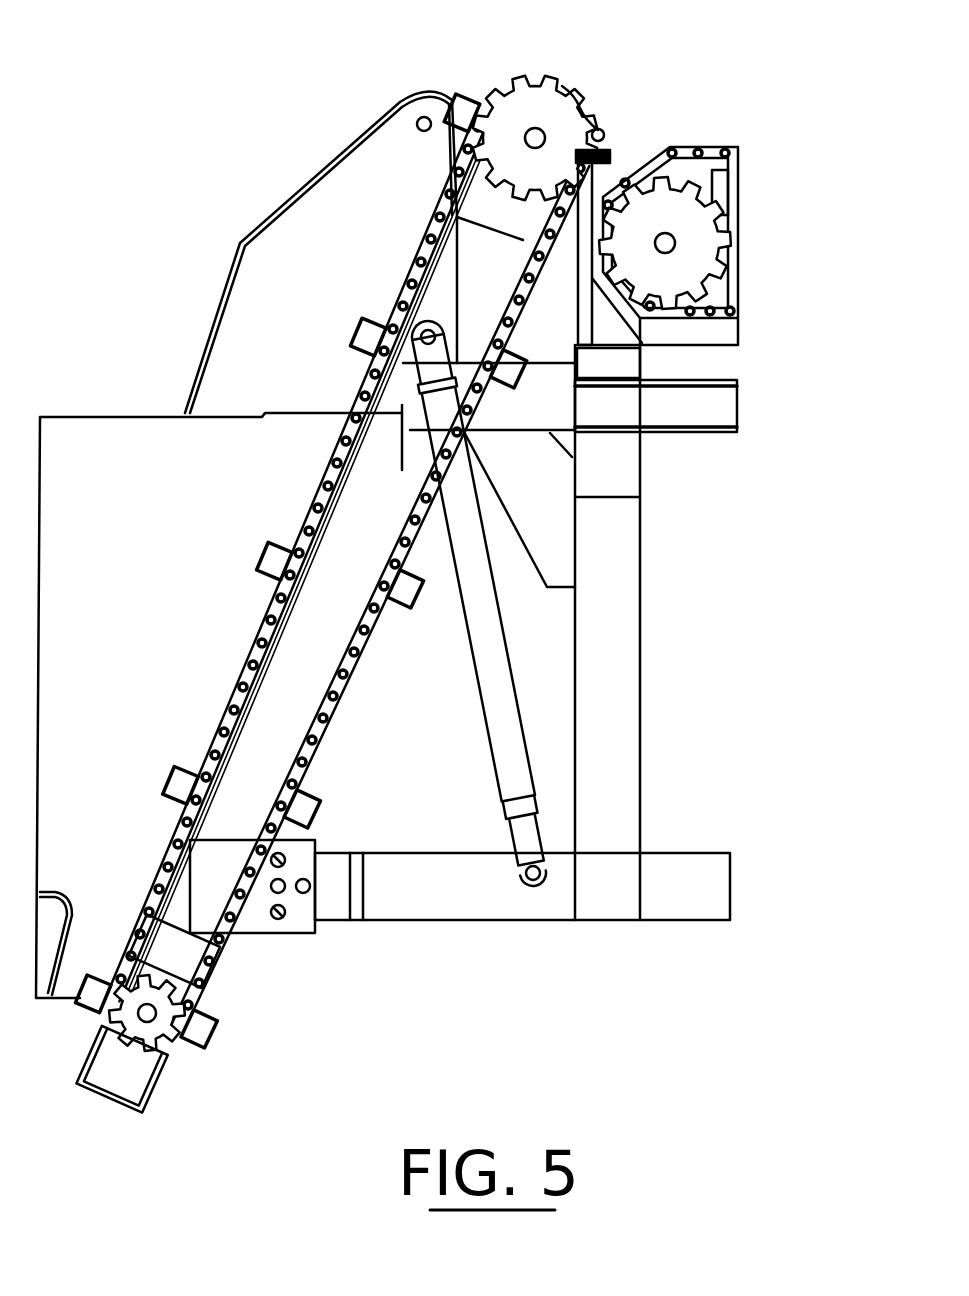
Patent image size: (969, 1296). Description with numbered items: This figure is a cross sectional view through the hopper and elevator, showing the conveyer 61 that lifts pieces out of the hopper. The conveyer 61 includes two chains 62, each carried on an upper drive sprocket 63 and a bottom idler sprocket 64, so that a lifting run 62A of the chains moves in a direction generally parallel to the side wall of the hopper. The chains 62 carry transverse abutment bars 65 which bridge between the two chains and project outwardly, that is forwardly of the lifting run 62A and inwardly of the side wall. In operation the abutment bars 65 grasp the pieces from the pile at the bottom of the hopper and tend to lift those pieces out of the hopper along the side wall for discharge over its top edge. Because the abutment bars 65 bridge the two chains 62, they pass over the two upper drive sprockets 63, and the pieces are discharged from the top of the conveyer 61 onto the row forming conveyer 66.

The conveyer 61 is at (272, 481).
The chains 62 is at (342, 668).
The lifting run 62A is at (247, 643).
The upper drive sprocket 63 is at (542, 100).
The bottom idler sprocket 64 is at (177, 1037).
The transverse abutment bars 65 is at (170, 775).
The row forming conveyer 66 is at (735, 100).